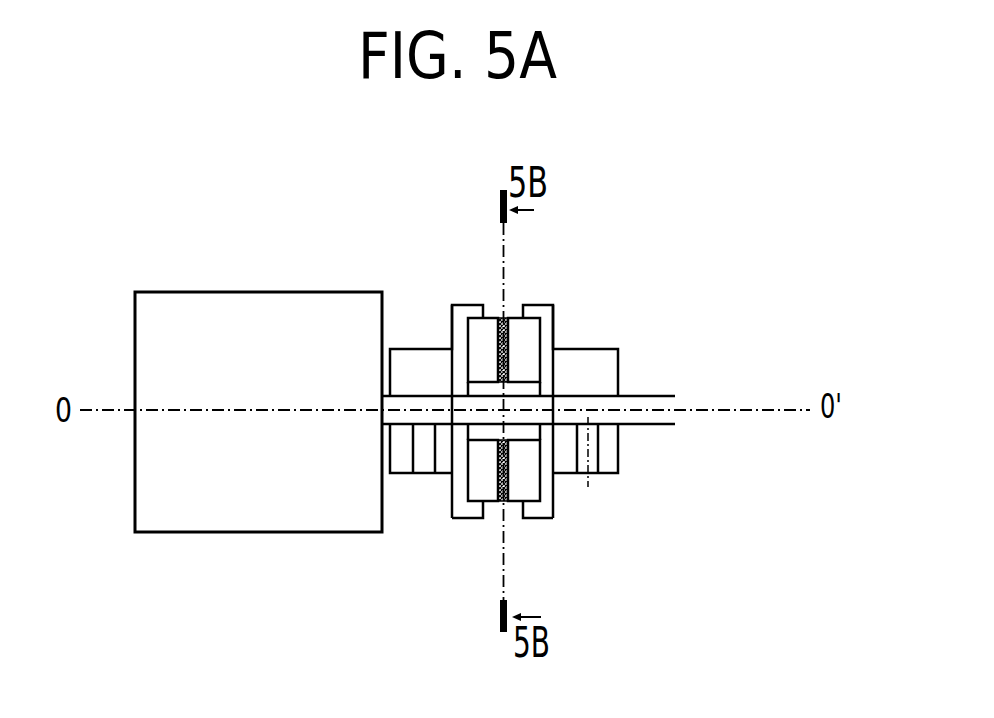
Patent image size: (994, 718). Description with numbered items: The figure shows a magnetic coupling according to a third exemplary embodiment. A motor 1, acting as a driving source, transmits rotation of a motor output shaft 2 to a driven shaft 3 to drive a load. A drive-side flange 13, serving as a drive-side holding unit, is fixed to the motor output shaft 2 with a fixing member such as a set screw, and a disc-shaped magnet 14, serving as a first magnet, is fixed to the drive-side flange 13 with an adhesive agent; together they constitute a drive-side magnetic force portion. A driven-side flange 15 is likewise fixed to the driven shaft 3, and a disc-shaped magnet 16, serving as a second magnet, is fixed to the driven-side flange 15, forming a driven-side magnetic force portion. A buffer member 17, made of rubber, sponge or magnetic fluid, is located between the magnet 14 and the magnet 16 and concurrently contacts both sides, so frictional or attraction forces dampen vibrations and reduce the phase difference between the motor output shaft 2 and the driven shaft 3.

The motor 1 is at (287, 520).
The motor output shaft 2 is at (430, 398).
The driven shaft 3 is at (633, 400).
The drive-side flange 13 is at (458, 498).
The magnet 14 is at (490, 494).
The driven-side flange 15 is at (572, 360).
The magnet 16 is at (530, 494).
The buffer member 17 is at (508, 318).